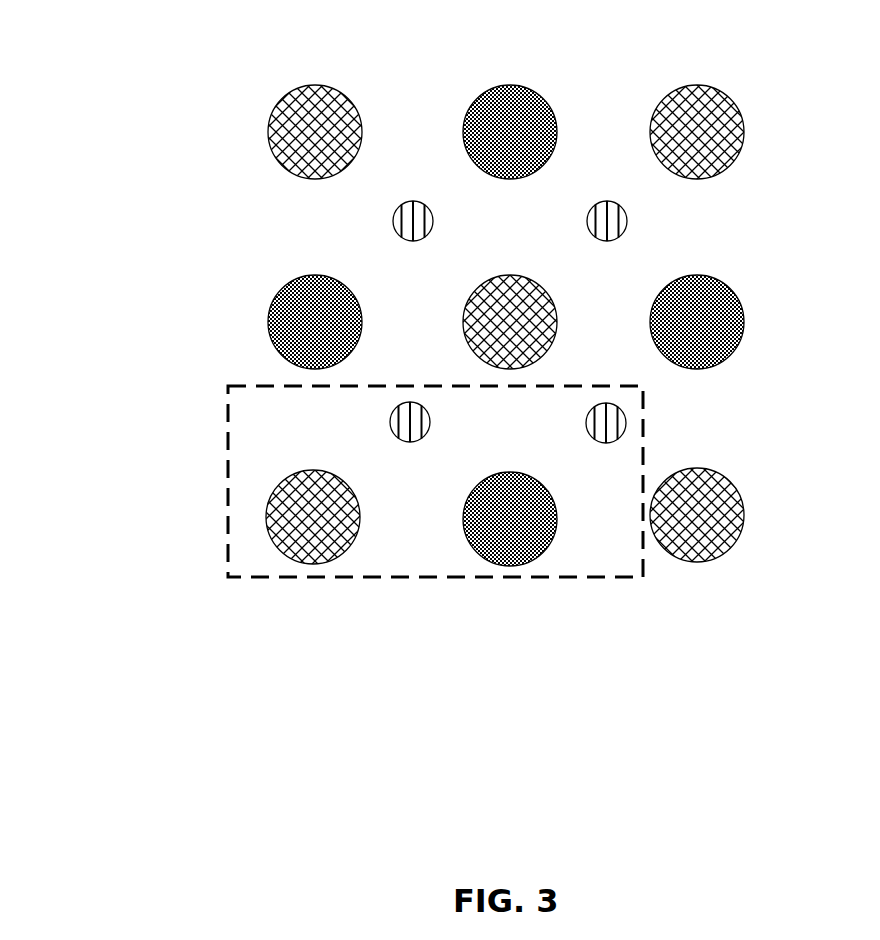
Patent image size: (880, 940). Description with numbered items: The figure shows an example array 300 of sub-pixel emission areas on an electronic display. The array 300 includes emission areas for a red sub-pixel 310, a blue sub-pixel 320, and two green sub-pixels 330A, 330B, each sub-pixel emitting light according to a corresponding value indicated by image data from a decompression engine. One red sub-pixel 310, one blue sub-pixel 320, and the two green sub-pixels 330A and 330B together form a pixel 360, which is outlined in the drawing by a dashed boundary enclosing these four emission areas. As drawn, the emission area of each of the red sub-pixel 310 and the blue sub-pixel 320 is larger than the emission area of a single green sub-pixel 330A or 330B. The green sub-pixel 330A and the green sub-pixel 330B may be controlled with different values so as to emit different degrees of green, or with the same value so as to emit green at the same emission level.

The array 300 is at (87, 70).
The red sub-pixel 310 is at (272, 542).
The blue sub-pixel 320 is at (463, 535).
The green sub-pixel 330A is at (398, 399).
The green sub-pixel 330B is at (600, 445).
The pixel 360 is at (227, 393).